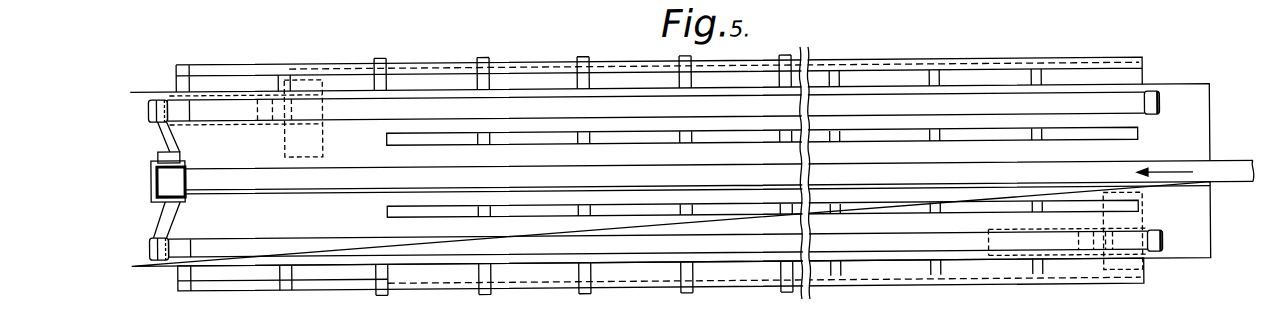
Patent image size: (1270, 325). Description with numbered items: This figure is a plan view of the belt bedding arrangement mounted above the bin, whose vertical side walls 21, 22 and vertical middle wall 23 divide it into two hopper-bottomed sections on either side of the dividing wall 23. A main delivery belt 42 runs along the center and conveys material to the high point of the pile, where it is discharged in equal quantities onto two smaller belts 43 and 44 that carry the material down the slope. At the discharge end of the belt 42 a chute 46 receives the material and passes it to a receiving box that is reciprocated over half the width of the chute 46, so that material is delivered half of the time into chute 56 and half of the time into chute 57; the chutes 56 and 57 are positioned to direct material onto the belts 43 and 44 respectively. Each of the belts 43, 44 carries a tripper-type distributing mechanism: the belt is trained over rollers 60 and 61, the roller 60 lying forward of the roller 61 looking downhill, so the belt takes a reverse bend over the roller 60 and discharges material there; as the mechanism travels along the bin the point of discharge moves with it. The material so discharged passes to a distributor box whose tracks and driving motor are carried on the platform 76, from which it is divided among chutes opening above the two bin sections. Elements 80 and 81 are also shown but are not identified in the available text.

The vertical side wall 21 is at (990, 64).
The vertical side wall 22 is at (1012, 282).
The vertical middle wall 23 is at (841, 321).
The main delivery belt 42 is at (369, 165).
The smaller belt 43 is at (213, 100).
The smaller belt 44 is at (268, 236).
The chute 46 is at (151, 176).
The chute 56 is at (152, 127).
The chute 57 is at (152, 219).
The roller 60 is at (293, 105).
The roller 61 is at (253, 118).
The platform 76 is at (318, 78).
The support 80 is at (801, 320).
The support 81 is at (766, 321).